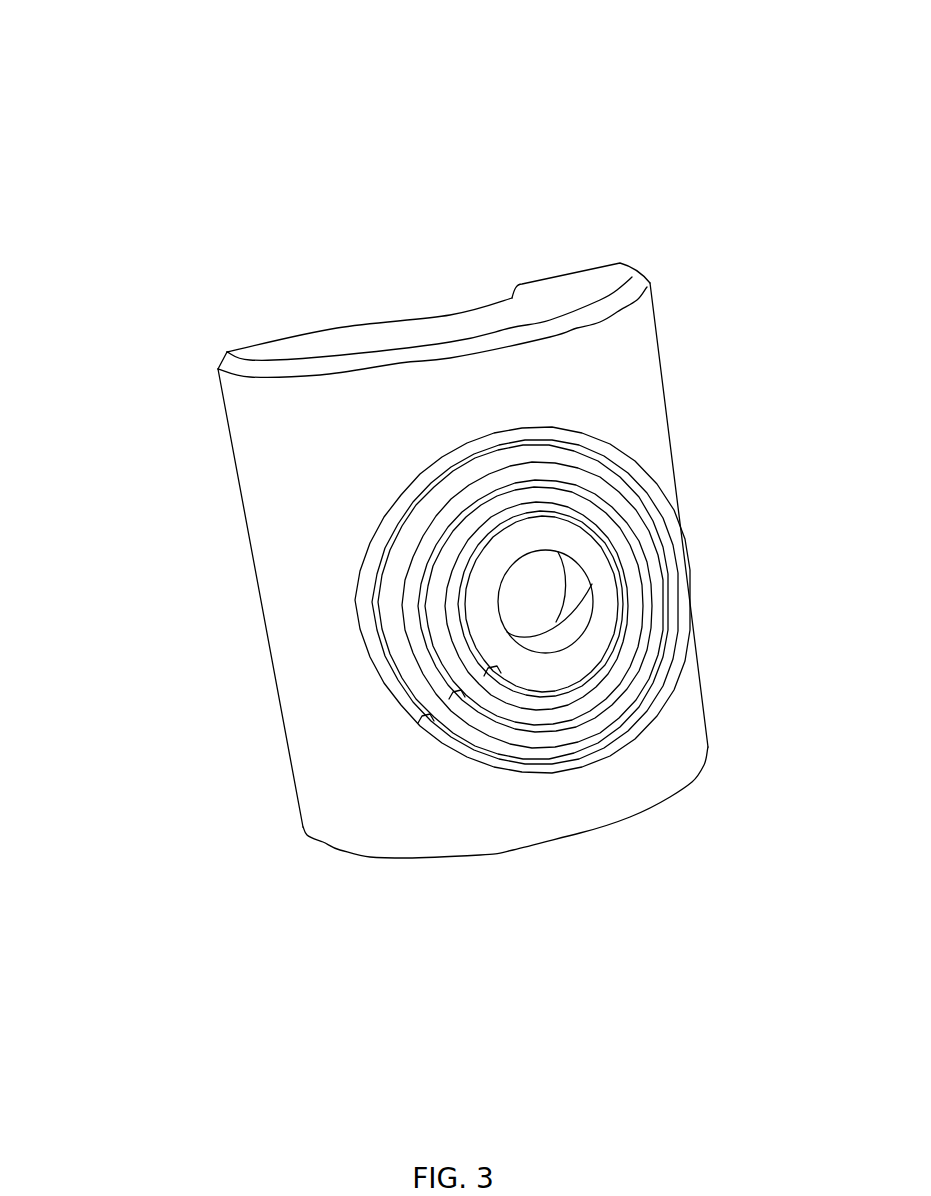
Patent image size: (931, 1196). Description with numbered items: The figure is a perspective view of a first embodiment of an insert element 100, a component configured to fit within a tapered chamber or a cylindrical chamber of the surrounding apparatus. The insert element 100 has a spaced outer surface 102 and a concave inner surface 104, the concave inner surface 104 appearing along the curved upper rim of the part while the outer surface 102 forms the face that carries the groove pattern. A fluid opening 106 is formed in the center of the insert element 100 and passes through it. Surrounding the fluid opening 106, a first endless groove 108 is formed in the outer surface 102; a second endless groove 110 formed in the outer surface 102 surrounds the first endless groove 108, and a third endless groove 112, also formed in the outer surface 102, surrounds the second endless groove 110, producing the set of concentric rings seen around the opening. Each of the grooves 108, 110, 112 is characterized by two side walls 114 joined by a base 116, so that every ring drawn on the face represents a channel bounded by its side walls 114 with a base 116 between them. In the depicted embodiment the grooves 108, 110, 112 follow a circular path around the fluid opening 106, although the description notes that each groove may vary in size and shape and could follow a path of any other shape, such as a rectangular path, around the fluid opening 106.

The insert element 100 is at (427, 107).
The outer surface 102 is at (278, 449).
The concave inner surface 104 is at (378, 328).
The fluid opening 106 is at (523, 598).
The first endless groove 108 is at (484, 675).
The second endless groove 110 is at (452, 697).
The third endless groove 112 is at (421, 722).
The side walls 114 is at (525, 443).
The base 116 is at (582, 435).